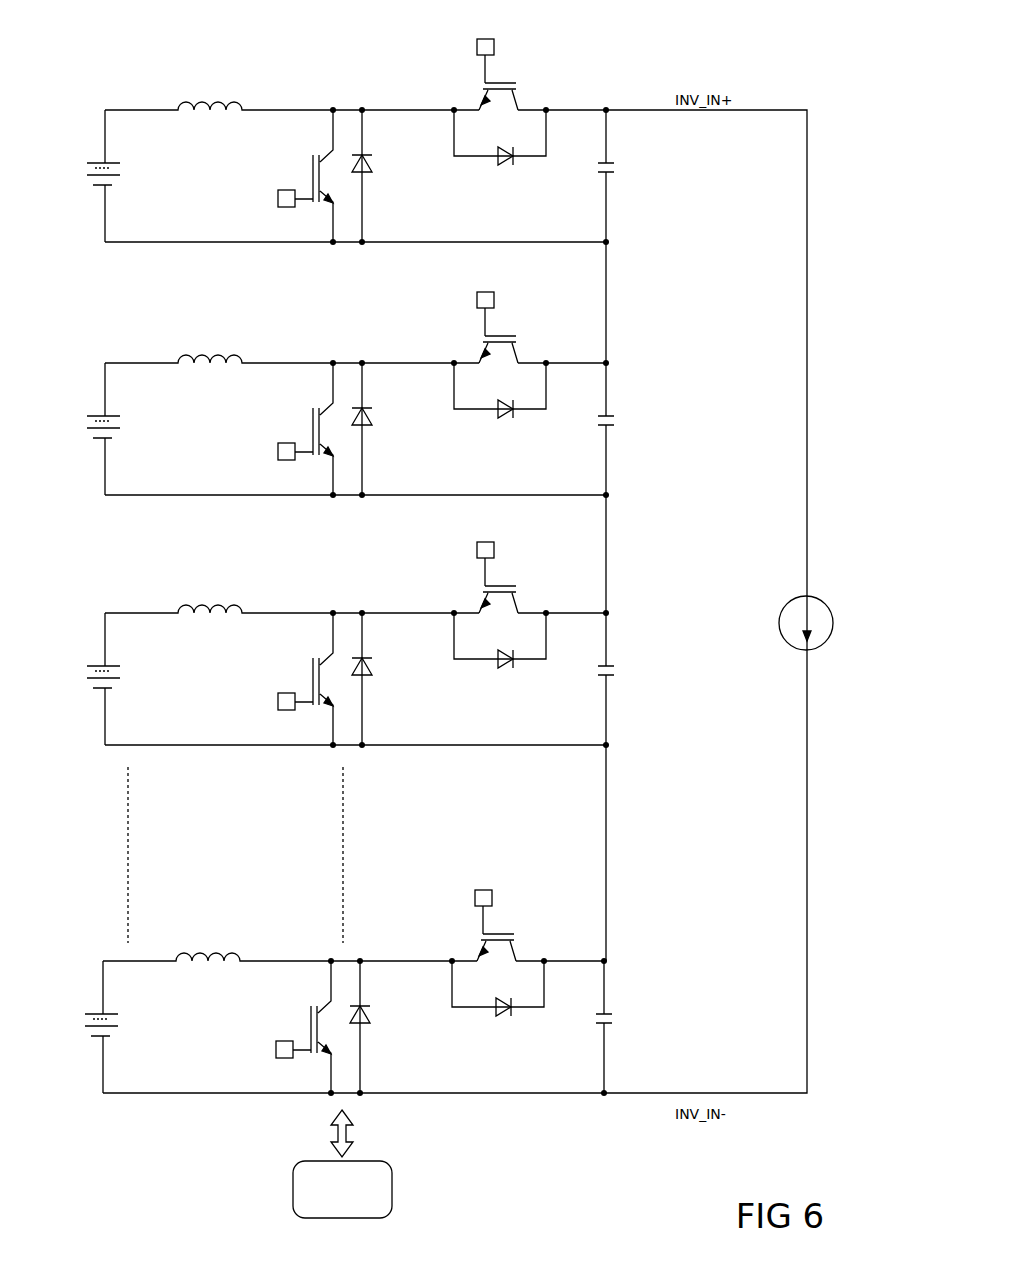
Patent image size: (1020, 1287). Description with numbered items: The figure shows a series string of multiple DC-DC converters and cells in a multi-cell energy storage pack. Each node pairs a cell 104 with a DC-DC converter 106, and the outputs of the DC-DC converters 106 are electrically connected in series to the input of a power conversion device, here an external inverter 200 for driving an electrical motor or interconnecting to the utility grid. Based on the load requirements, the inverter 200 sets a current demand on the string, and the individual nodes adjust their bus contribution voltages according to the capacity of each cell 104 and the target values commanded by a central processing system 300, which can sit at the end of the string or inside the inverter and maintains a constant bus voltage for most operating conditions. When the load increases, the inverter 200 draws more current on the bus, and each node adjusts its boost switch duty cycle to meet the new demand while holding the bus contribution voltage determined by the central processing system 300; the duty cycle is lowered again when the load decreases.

The cell 104 is at (91, 161).
The DC-DC converter 106 is at (282, 83).
The inverter 200 is at (781, 612).
The central processing system 300 is at (342, 1164).